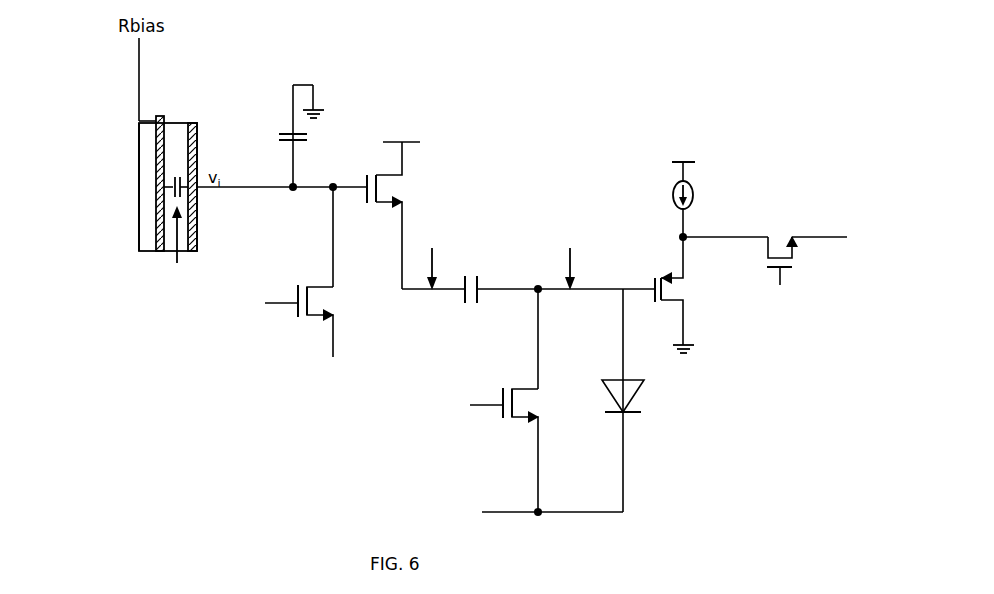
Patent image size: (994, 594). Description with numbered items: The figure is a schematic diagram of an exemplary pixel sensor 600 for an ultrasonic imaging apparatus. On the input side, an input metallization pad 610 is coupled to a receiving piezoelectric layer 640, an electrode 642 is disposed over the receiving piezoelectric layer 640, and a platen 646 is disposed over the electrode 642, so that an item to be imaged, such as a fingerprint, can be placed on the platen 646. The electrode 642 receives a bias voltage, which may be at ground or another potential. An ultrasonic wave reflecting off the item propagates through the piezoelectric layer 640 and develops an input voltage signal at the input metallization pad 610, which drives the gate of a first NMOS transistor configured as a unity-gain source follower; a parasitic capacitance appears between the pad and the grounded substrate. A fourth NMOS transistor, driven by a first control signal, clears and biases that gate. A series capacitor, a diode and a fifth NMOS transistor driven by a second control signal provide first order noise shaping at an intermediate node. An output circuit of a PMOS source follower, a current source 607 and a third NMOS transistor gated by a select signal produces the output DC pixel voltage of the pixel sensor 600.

The pixel sensor 600 is at (526, 94).
The current source 607 is at (672, 198).
The input metallization pad 610 is at (193, 122).
The receiving piezoelectric layer 640 is at (177, 122).
The electrode 642 is at (155, 239).
The platen 646 is at (139, 145).